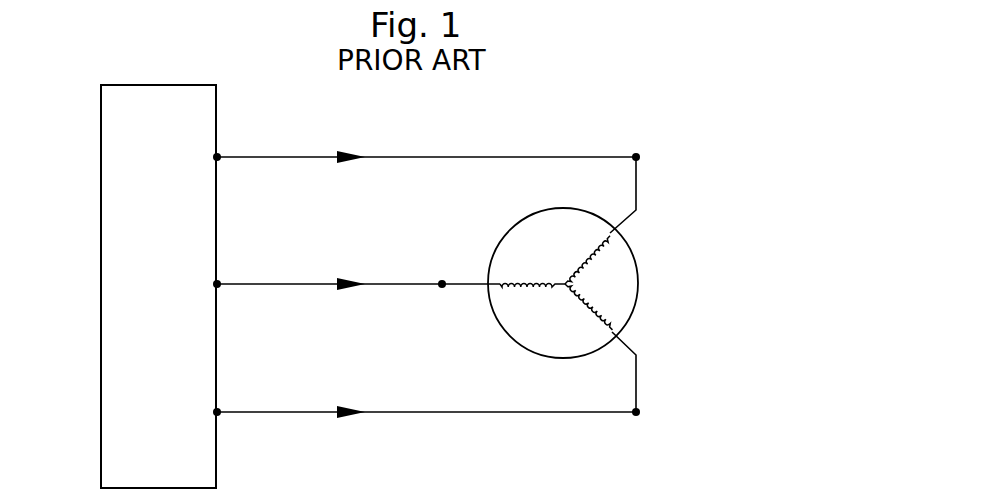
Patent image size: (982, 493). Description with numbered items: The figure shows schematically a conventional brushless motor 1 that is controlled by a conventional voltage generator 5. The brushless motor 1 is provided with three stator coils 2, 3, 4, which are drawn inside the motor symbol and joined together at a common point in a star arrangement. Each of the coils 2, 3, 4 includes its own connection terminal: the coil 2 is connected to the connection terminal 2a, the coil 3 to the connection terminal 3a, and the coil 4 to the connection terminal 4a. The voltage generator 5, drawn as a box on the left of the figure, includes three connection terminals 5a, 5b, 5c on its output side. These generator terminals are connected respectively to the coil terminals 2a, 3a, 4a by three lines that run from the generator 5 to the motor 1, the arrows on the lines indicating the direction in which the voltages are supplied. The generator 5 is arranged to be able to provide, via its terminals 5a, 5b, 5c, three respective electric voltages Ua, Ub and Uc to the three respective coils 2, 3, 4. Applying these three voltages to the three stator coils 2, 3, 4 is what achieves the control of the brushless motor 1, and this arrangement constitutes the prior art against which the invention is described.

The brushless motor 1 is at (644, 282).
The stator coil 2 is at (597, 252).
The stator coil 3 is at (524, 280).
The stator coil 4 is at (590, 318).
The connection terminal 2a is at (639, 150).
The connection terminal 3a is at (445, 278).
The connection terminal 4a is at (637, 416).
The voltage generator 5 is at (122, 286).
The connection terminal 5a is at (219, 154).
The connection terminal 5b is at (219, 281).
The connection terminal 5c is at (219, 409).